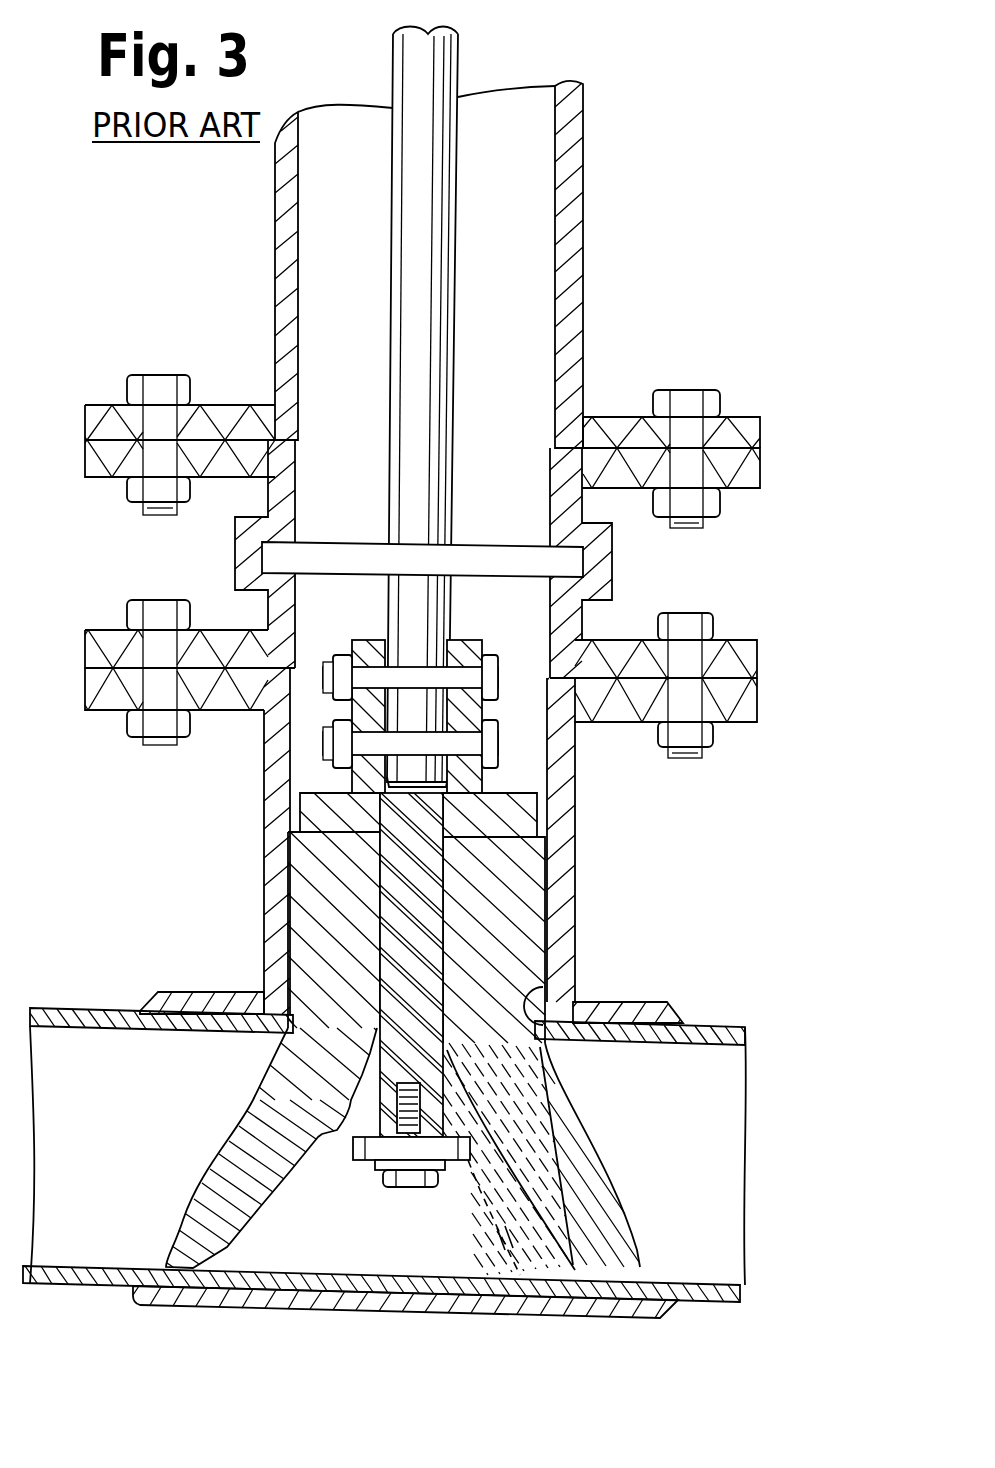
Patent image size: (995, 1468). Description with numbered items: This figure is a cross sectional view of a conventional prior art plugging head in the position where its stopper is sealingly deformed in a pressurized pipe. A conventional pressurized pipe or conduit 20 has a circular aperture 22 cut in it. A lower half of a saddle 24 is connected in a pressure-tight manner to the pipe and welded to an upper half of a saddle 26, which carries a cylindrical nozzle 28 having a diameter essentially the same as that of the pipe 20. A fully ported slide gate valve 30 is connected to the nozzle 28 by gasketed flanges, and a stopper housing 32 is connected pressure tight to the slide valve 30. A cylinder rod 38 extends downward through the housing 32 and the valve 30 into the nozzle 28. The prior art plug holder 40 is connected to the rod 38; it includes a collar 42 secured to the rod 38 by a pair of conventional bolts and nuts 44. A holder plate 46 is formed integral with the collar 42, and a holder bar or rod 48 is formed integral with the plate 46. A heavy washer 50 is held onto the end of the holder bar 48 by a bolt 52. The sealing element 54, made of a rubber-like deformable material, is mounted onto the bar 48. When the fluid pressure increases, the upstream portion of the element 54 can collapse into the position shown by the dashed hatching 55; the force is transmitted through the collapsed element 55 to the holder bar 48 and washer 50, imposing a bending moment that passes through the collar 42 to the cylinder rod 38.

The pressurized pipe 20 is at (120, 1015).
The circular aperture 22 is at (545, 983).
The lower half of saddle 24 is at (615, 1318).
The upper half of saddle 26 is at (225, 1000).
The cylindrical nozzle 28 is at (560, 864).
The slide gate valve 30 is at (650, 555).
The stopper housing 32 is at (598, 129).
The cylinder rod 38 is at (415, 620).
The plug holder 40 is at (322, 638).
The collar 42 is at (462, 720).
The bolts and nuts 44 is at (340, 678).
The holder plate 46 is at (500, 818).
The holder bar 48 is at (412, 955).
The heavy washer 50 is at (350, 1103).
The bolt 52 is at (400, 1185).
The sealing element 54 is at (315, 903).
The collapsed element 55 is at (495, 1228).